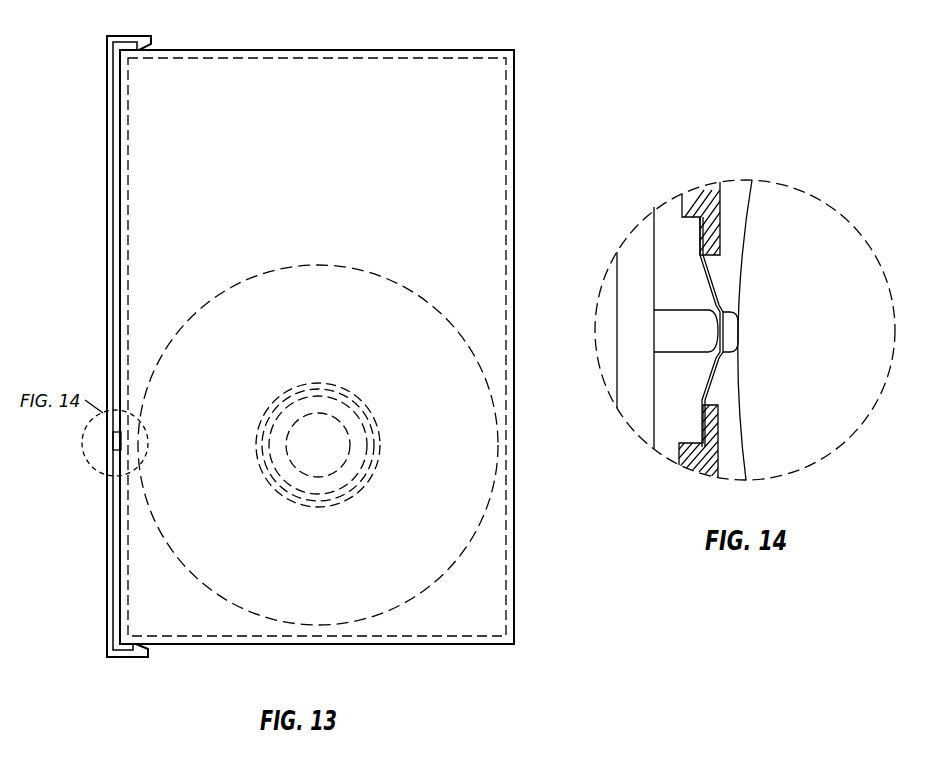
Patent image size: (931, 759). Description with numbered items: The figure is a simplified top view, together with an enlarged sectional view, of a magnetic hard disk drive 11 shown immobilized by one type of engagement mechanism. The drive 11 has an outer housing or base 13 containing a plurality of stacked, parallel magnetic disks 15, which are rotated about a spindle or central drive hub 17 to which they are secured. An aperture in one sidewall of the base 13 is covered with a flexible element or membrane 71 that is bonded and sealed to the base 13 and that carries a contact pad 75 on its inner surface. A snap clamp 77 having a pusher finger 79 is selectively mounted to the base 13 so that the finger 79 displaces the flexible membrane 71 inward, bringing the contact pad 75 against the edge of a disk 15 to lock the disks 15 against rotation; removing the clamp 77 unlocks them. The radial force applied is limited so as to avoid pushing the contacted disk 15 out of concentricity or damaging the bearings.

In FIG. 13, the disk drive 11 is at (325, 346).
In FIG. 14, the disk drive 11 is at (748, 150).
In FIG. 13, the base 13 is at (515, 566).
In FIG. 13, the magnetic disks 15 is at (370, 292).
In FIG. 14, the magnetic disks 15 is at (742, 378).
In FIG. 13, the central drive hub 17 is at (321, 442).
In FIG. 14, the flexible membrane 71 is at (715, 278).
In FIG. 14, the contact pad 75 is at (736, 311).
In FIG. 13, the snap clamp 77 is at (99, 245).
In FIG. 14, the snap clamp 77 is at (628, 253).
In FIG. 13, the pusher finger 79 is at (120, 442).
In FIG. 14, the pusher finger 79 is at (708, 328).